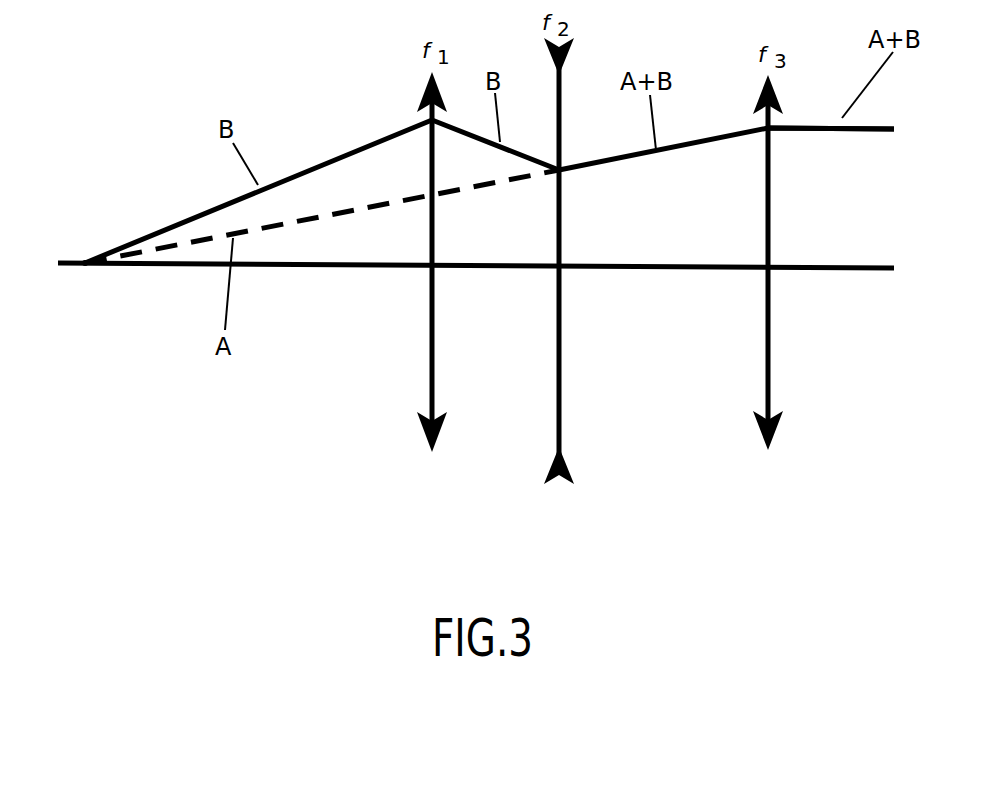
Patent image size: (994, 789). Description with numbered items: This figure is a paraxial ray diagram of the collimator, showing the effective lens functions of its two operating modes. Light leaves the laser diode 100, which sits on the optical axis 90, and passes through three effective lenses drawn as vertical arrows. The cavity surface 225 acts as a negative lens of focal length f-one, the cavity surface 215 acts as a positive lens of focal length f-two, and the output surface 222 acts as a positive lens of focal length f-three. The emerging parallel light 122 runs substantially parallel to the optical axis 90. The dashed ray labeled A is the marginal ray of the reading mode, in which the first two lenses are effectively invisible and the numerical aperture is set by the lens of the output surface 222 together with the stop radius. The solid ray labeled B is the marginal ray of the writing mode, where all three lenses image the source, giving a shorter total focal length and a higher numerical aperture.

The optical axis 90 is at (852, 272).
The laser diode 100 is at (82, 261).
The parallel light 122 is at (833, 140).
The cavity surface 225 is at (426, 447).
The cavity surface 215 is at (560, 487).
The output surface 222 is at (775, 455).